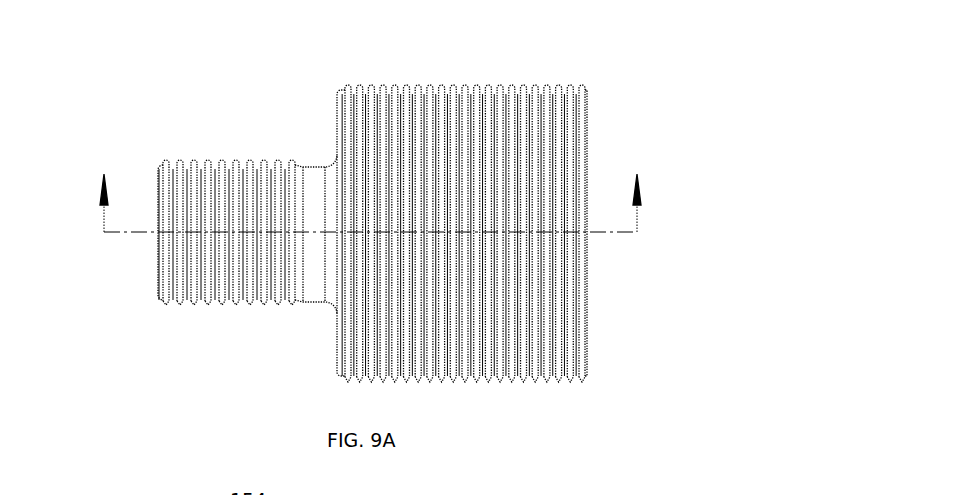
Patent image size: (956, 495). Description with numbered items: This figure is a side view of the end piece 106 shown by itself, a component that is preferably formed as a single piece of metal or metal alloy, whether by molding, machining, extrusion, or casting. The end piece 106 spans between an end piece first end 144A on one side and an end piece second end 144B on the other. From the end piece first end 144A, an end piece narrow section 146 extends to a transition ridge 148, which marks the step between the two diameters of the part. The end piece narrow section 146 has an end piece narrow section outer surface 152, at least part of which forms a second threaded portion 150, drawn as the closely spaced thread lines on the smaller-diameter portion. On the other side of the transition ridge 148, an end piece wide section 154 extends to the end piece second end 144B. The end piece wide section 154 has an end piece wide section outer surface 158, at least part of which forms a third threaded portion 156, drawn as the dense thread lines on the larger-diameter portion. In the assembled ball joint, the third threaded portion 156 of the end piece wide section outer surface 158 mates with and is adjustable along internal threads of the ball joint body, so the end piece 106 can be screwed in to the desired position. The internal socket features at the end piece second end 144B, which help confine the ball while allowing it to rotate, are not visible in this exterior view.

The end piece 106 is at (226, 100).
The end piece first end 144A is at (162, 278).
The end piece second end 144B is at (585, 347).
The end piece narrow section 146 is at (185, 258).
The transition ridge 148 is at (335, 318).
The second threaded portion 150 is at (213, 163).
The end piece narrow section outer surface 152 is at (268, 280).
The end piece wide section 154 is at (430, 268).
The third threaded portion 156 is at (538, 289).
The end piece wide section outer surface 158 is at (550, 238).